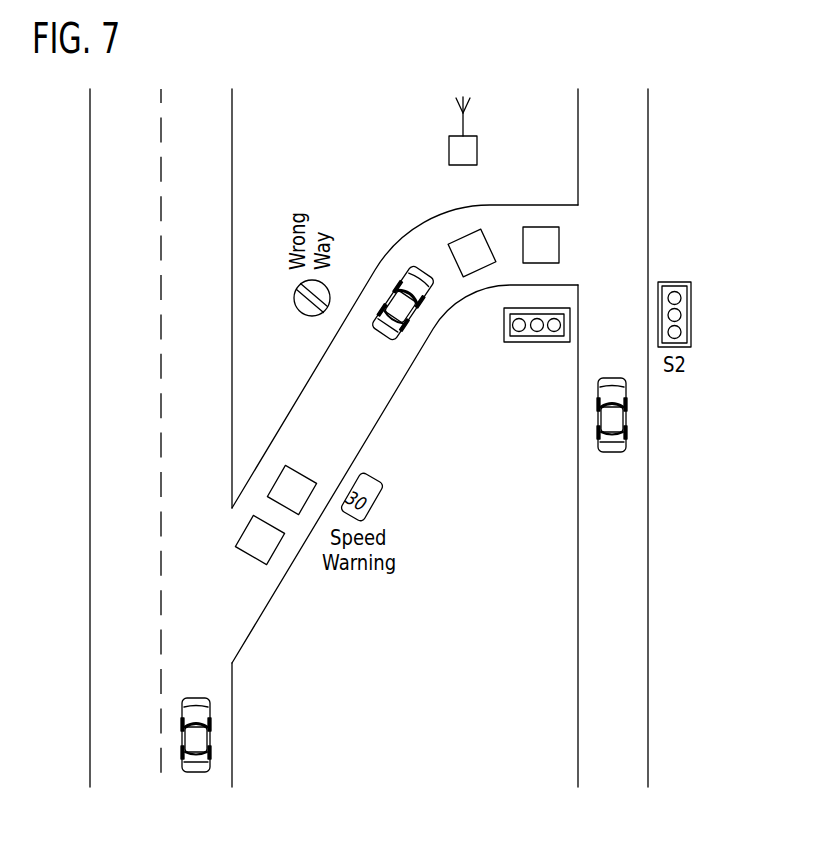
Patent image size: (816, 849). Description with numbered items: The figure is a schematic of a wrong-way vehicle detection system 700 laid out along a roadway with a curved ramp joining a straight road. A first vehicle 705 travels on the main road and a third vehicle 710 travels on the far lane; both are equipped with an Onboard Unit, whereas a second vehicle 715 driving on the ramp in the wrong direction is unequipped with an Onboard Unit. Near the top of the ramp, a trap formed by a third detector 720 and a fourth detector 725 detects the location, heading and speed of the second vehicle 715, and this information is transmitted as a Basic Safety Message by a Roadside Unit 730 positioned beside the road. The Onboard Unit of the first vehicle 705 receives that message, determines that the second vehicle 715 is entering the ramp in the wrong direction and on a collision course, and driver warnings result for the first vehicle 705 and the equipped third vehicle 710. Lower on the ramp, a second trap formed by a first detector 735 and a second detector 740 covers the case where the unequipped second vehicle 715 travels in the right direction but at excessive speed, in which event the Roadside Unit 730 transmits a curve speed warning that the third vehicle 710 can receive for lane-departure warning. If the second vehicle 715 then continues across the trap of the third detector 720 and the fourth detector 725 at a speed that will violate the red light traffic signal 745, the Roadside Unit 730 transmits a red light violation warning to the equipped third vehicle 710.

The wrong-way vehicle detection system 700 is at (684, 109).
The vehicle V1 705 is at (208, 738).
The vehicle V3 710 is at (623, 417).
The vehicle V2 715 is at (417, 313).
The detector D3 720 is at (460, 235).
The detector D4 725 is at (560, 243).
The Roadside Unit 730 is at (448, 150).
The detector D1 735 is at (250, 558).
The detector D2 740 is at (300, 465).
The red light traffic signal S1 745 is at (523, 342).